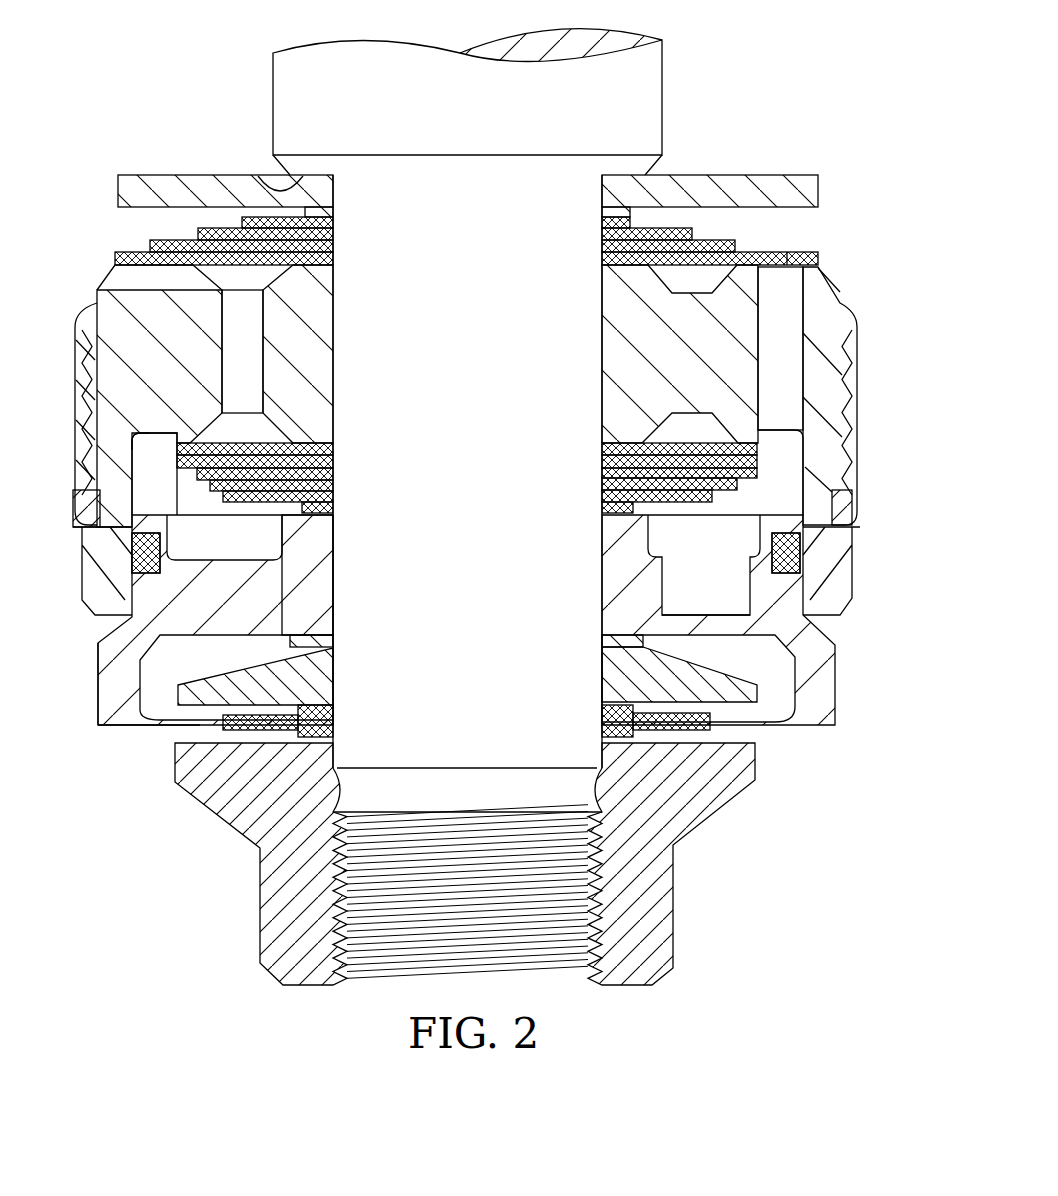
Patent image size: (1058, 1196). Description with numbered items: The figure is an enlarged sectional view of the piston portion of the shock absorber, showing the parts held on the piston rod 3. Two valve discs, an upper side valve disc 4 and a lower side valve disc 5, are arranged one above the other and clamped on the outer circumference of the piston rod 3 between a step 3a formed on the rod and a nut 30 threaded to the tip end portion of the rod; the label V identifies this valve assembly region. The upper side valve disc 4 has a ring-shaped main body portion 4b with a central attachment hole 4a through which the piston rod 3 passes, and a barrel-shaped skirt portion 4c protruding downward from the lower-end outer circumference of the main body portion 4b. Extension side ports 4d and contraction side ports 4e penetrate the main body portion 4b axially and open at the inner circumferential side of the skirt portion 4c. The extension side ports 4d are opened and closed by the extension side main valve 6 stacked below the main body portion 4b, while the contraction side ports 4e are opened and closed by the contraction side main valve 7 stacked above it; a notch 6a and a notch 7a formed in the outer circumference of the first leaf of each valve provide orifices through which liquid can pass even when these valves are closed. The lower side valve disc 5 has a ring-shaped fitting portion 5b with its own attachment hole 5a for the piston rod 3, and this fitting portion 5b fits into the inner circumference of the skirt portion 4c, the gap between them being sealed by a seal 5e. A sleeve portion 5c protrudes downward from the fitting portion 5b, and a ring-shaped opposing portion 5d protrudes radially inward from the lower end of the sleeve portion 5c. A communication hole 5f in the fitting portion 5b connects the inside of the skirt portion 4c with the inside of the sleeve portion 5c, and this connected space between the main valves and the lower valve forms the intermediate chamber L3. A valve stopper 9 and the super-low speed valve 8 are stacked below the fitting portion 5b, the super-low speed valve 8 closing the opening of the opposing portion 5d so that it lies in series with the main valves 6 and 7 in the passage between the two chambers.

The piston rod 3 is at (665, 98).
The step 3a is at (258, 172).
The valve body V is at (100, 213).
The contraction side main valve 7 is at (785, 237).
The notch 7a is at (795, 262).
The upper side valve disc 4 is at (469, 414).
The attachment hole 4a is at (340, 312).
The main body portion 4b is at (103, 350).
The skirt portion 4c is at (85, 553).
The extension side ports 4d is at (250, 378).
The contraction side ports 4e is at (785, 383).
The extension side main valve 6 is at (150, 481).
The notch 6a is at (145, 440).
The intermediate chamber L3 is at (780, 470).
The lower side valve disc 5 is at (469, 653).
The attachment hole 5a is at (333, 590).
The fitting portion 5b is at (125, 598).
The sleeve portion 5c is at (97, 698).
The opposing portion 5d is at (165, 732).
The seal 5e is at (812, 540).
The communication hole 5f is at (680, 590).
The valve stopper 9 is at (735, 672).
The super-low speed valve 8 is at (752, 733).
The nut 30 is at (262, 907).